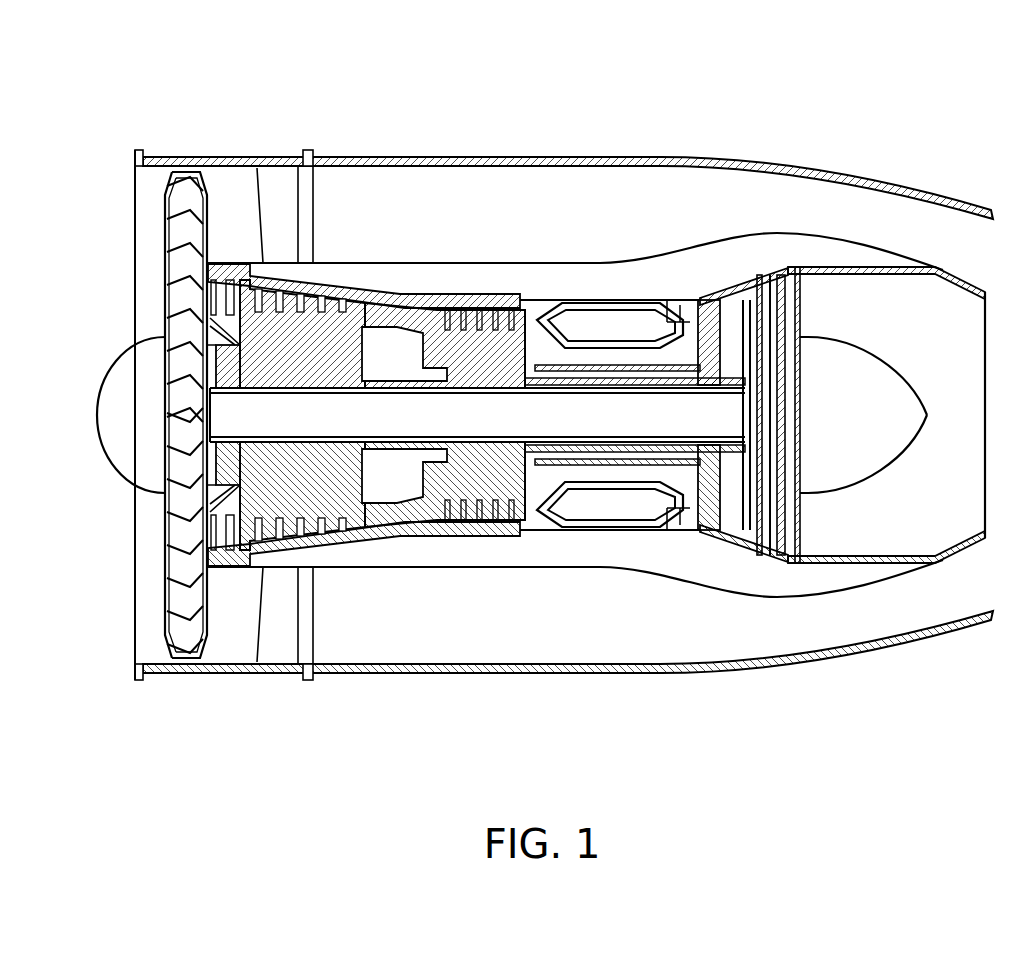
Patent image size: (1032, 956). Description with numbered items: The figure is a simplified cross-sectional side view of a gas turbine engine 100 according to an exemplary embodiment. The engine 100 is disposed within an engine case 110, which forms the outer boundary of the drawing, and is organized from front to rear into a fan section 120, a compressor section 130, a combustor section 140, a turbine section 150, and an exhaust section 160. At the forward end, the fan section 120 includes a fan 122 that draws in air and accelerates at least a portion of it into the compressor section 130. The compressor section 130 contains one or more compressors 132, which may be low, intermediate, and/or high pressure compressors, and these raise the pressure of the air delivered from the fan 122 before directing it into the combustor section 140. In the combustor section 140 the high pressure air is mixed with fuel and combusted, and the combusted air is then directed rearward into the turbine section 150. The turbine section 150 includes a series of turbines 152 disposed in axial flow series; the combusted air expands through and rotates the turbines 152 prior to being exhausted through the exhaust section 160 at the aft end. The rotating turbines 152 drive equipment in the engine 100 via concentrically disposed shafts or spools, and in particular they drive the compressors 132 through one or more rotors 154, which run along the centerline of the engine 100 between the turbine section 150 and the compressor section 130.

The gas turbine engine 100 is at (750, 116).
The engine case 110 is at (348, 153).
The fan section 120 is at (220, 708).
The fan 122 is at (175, 261).
The compressor section 130 is at (220, 708).
The compressors 132 is at (333, 372).
The combustor section 140 is at (642, 708).
The turbine section 150 is at (807, 708).
The turbines 152 is at (806, 567).
The rotors 154 is at (380, 392).
The exhaust section 160 is at (935, 708).